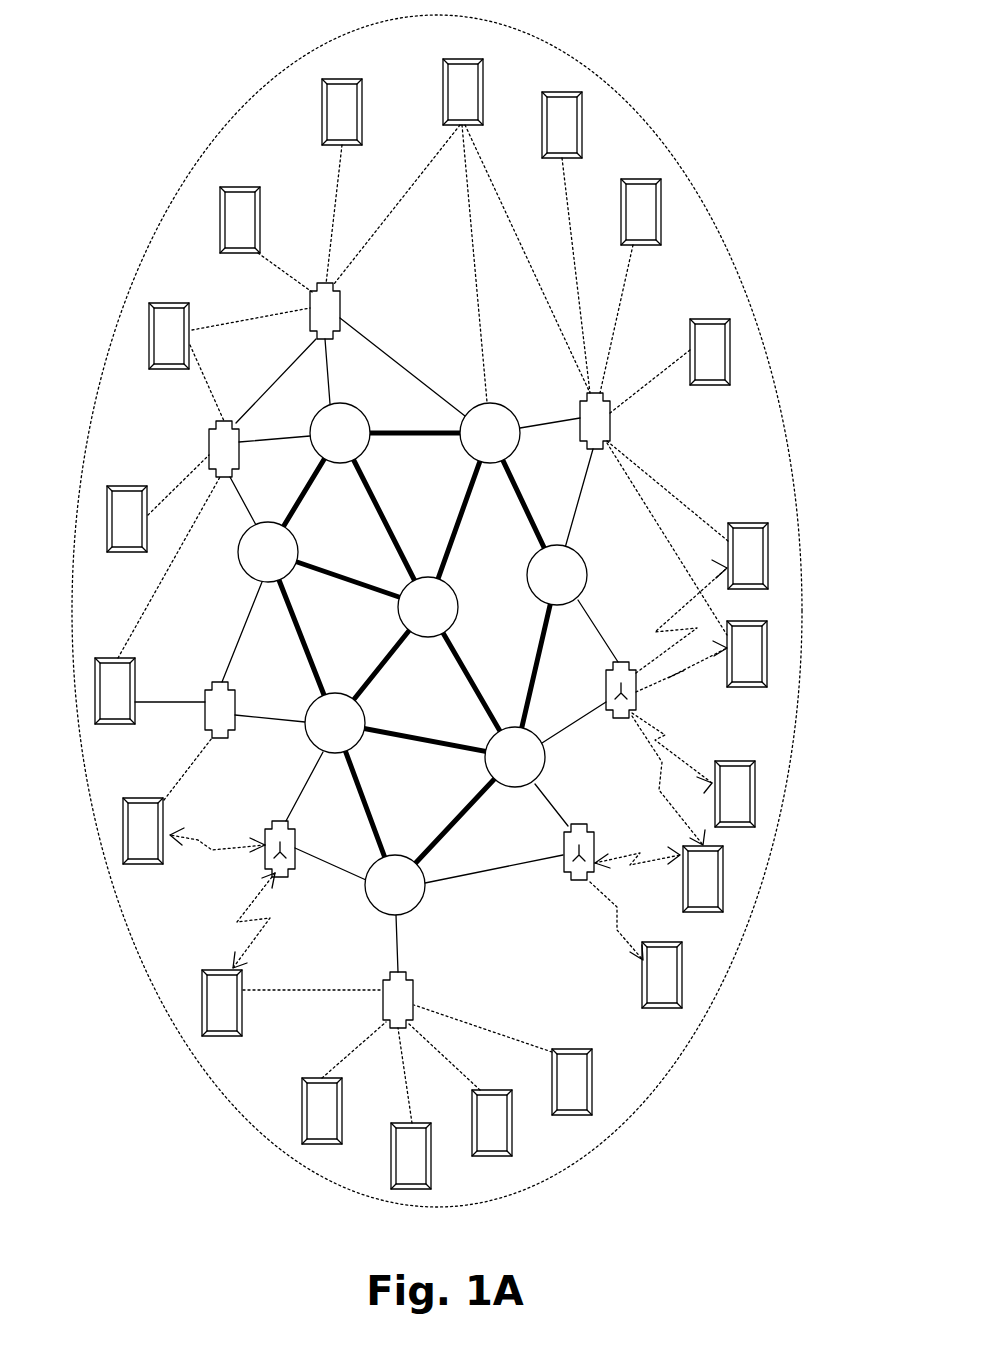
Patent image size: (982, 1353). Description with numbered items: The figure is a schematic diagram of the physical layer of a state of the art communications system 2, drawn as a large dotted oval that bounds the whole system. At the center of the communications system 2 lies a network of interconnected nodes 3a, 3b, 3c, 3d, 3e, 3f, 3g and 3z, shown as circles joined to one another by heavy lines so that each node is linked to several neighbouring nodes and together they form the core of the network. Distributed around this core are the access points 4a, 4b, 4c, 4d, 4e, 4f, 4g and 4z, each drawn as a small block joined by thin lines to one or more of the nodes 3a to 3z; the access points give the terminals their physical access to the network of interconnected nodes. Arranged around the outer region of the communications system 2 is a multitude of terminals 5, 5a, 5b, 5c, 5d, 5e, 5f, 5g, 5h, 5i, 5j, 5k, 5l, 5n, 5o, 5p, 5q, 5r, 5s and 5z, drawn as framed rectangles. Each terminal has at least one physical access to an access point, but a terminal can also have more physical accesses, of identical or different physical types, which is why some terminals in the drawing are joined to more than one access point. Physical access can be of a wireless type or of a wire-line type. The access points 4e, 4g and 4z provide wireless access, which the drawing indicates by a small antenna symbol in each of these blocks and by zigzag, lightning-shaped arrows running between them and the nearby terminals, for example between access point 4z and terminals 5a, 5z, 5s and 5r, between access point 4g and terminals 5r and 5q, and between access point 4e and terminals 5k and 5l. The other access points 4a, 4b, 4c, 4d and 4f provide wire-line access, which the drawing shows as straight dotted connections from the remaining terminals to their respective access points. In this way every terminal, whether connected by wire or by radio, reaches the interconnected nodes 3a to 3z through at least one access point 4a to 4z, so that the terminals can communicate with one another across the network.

The communications system 2 is at (437, 611).
The node 3a is at (536, 593).
The node 3b is at (406, 618).
The node 3c is at (510, 786).
The node 3d is at (467, 456).
The node 3e is at (338, 456).
The node 3f is at (315, 741).
The node 3g is at (375, 897).
The node 3z is at (247, 562).
The access point 4a is at (575, 440).
The access point 4b is at (301, 311).
The access point 4c is at (198, 449).
The access point 4d is at (194, 713).
The access point 4e is at (260, 832).
The access point 4f is at (380, 984).
The access point 4g is at (580, 883).
The access point 4z is at (622, 723).
The terminal 5 is at (297, 1111).
The terminal 5a is at (773, 556).
The terminal 5b is at (733, 346).
The terminal 5c is at (664, 206).
The terminal 5d is at (585, 124).
The terminal 5e is at (485, 86).
The terminal 5f is at (364, 108).
The terminal 5g is at (216, 219).
The terminal 5h is at (144, 335).
The terminal 5i is at (102, 519).
The terminal 5j is at (88, 691).
The terminal 5k is at (117, 831).
The terminal 5l is at (196, 1003).
The terminal 5n is at (386, 1156).
The terminal 5o is at (519, 1124).
The terminal 5p is at (598, 1082).
The terminal 5q is at (690, 975).
The terminal 5r is at (732, 879).
The terminal 5s is at (763, 794).
The terminal 5z is at (775, 654).